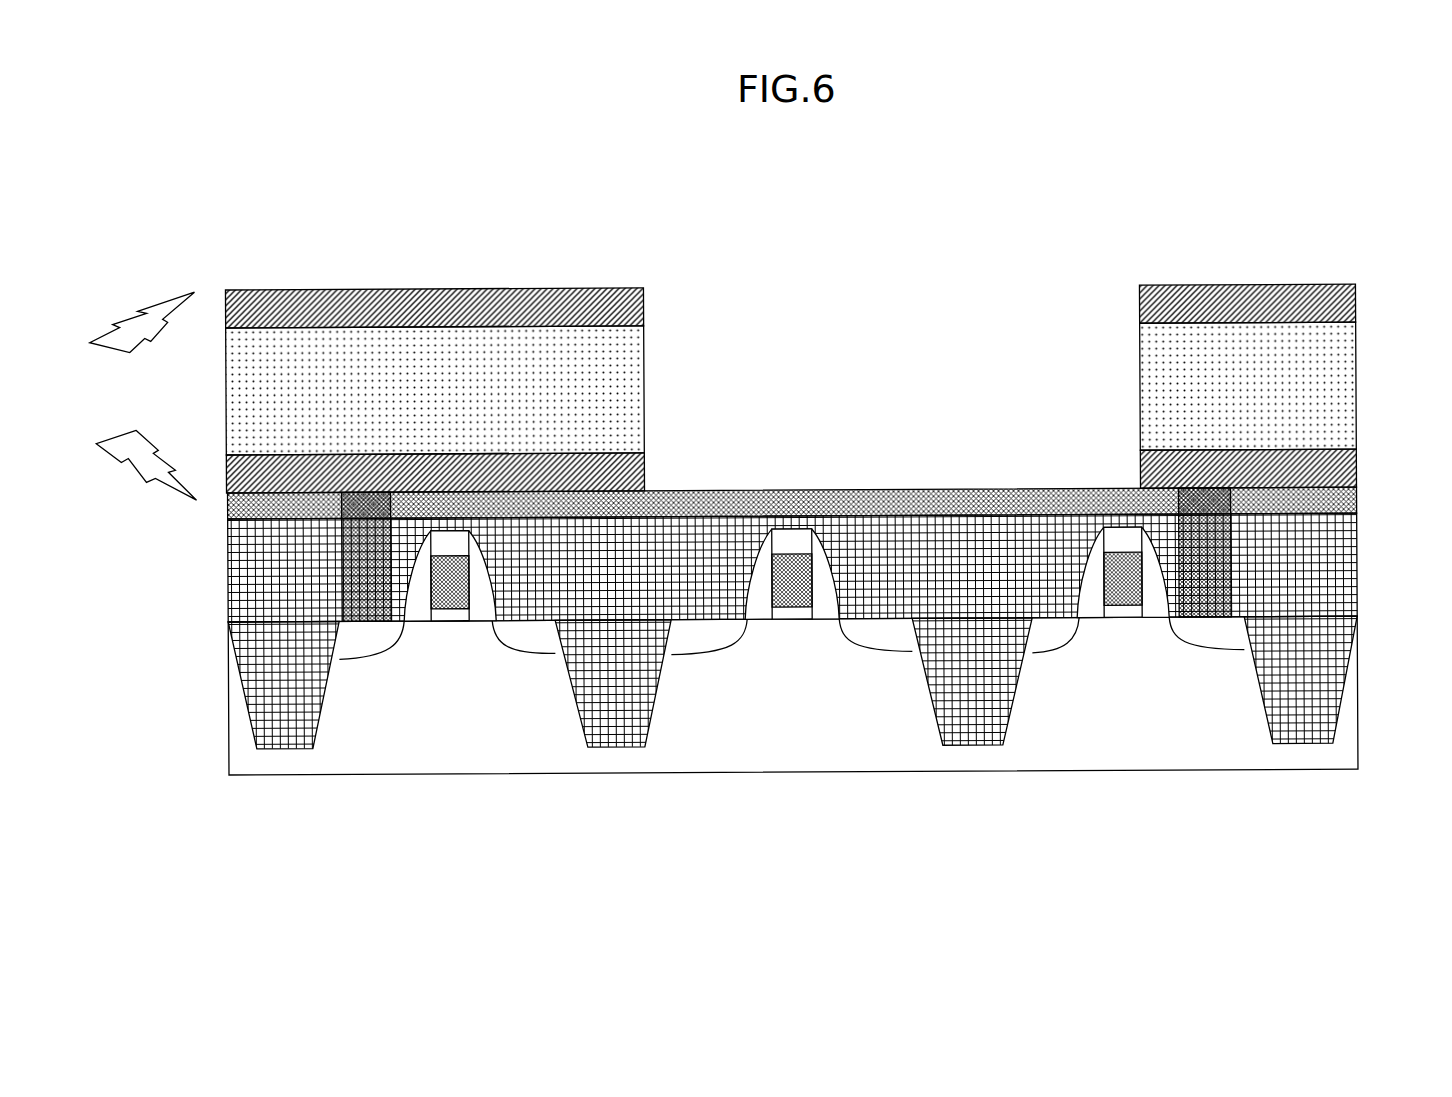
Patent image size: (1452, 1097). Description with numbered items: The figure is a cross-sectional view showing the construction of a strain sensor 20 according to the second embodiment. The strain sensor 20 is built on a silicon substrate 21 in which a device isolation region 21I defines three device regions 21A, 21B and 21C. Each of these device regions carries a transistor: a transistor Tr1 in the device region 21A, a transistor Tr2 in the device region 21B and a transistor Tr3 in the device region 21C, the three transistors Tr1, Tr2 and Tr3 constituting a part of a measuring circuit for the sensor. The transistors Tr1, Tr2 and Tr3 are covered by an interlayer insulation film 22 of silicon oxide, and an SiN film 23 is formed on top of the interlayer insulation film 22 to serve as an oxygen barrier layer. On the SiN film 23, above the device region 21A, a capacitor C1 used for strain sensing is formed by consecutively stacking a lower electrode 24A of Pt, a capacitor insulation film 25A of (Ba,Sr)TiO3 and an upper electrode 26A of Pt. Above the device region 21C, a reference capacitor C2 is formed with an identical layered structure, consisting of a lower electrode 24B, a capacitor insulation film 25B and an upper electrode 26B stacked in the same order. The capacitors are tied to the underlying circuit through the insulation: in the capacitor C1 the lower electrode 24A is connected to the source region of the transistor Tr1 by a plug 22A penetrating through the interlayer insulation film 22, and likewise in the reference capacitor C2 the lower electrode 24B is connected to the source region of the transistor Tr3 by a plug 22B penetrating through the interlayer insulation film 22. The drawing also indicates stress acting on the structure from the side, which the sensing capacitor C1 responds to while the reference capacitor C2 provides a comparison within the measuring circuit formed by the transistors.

The strain sensor 20 is at (877, 130).
The silicon substrate 21 is at (1358, 729).
The device region 21A is at (533, 783).
The device region 21B is at (883, 783).
The device region 21C is at (1218, 783).
The device isolation region 21I is at (275, 749).
The interlayer insulation film 22 is at (1358, 543).
The plug 22A is at (343, 590).
The plug 22B is at (1232, 560).
The SiN film 23 is at (1358, 506).
The lower electrode 24A is at (646, 468).
The lower electrode 24B is at (1142, 468).
The capacitor insulation film 25A is at (646, 387).
The capacitor insulation film 25B is at (1142, 387).
The upper electrode 26A is at (646, 299).
The upper electrode 26B is at (1142, 300).
The capacitor C1 is at (479, 329).
The reference capacitor C2 is at (1206, 326).
The transistor Tr1 is at (441, 648).
The transistor Tr2 is at (792, 648).
The transistor Tr3 is at (1129, 648).